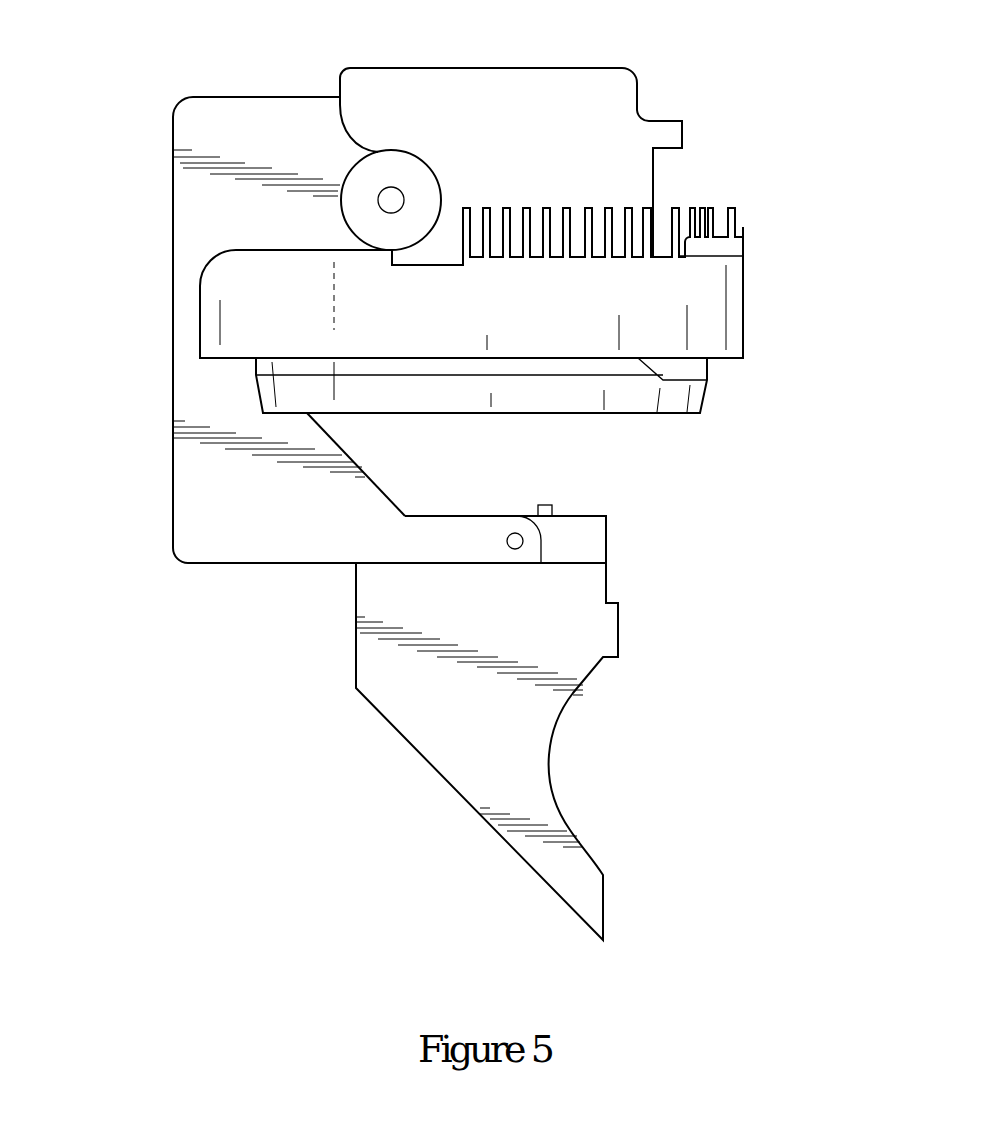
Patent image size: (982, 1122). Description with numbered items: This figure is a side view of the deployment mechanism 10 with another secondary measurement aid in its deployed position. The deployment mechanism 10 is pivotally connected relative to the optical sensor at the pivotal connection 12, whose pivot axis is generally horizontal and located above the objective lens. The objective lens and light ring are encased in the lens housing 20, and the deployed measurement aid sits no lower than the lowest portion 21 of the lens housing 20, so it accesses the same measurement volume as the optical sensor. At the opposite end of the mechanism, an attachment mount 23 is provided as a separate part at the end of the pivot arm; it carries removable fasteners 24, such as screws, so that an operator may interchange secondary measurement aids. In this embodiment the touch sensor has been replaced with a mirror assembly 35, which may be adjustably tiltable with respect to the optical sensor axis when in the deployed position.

The deployment mechanism 10 is at (173, 440).
The pivotal connection 12 is at (388, 198).
The lens housing 20 is at (743, 300).
The lowest portion of the lens housing 21 is at (683, 413).
The attachment mount 23 is at (606, 540).
The removable fasteners 24 is at (552, 508).
The mirror assembly 35 is at (557, 730).